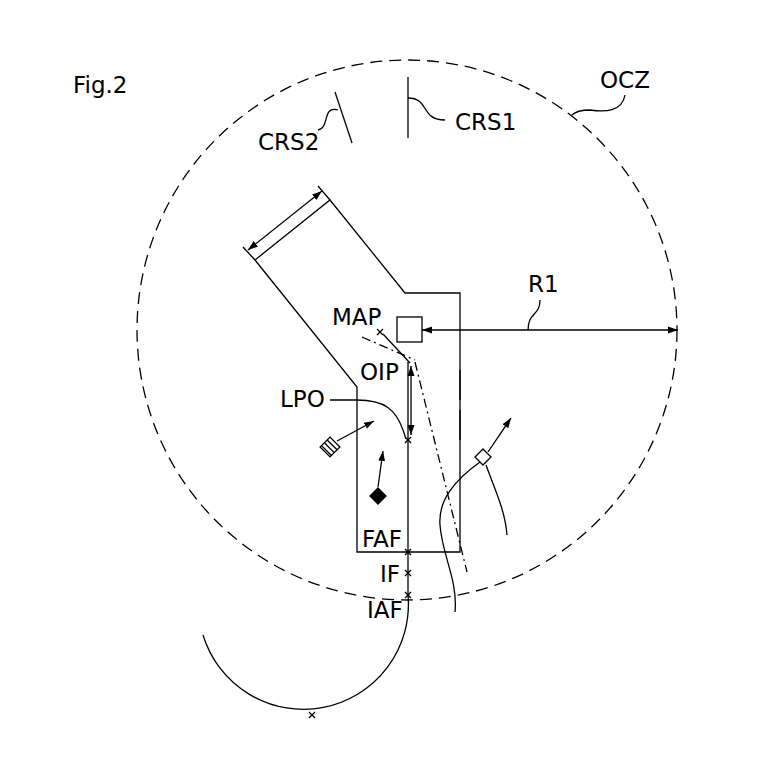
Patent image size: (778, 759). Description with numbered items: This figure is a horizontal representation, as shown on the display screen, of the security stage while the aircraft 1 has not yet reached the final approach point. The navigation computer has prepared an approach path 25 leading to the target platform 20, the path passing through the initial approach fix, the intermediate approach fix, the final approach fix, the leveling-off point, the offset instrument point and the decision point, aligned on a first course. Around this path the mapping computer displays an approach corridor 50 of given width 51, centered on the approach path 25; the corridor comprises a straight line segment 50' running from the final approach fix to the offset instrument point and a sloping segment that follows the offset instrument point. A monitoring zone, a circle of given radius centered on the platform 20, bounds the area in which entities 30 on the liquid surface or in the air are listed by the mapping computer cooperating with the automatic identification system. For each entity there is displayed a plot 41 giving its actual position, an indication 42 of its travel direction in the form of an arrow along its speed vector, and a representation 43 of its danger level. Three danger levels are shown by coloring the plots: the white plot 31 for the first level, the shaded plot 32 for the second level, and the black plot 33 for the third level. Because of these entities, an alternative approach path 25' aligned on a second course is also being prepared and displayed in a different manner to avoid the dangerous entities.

The aircraft 1 is at (308, 712).
The target platform 20 is at (413, 317).
The approach path 25 is at (330, 652).
The alternative approach path 25' is at (460, 552).
The entities 30 is at (363, 497).
The plot 31 is at (484, 466).
The plot 32 is at (316, 446).
The plot 33 is at (373, 502).
The plot 41 is at (504, 455).
The indication of travel direction 42 is at (514, 432).
The representation of danger level 43 is at (505, 513).
The approach corridor 50 is at (500, 373).
The straight line segment 50' is at (504, 411).
The width 51 is at (286, 223).